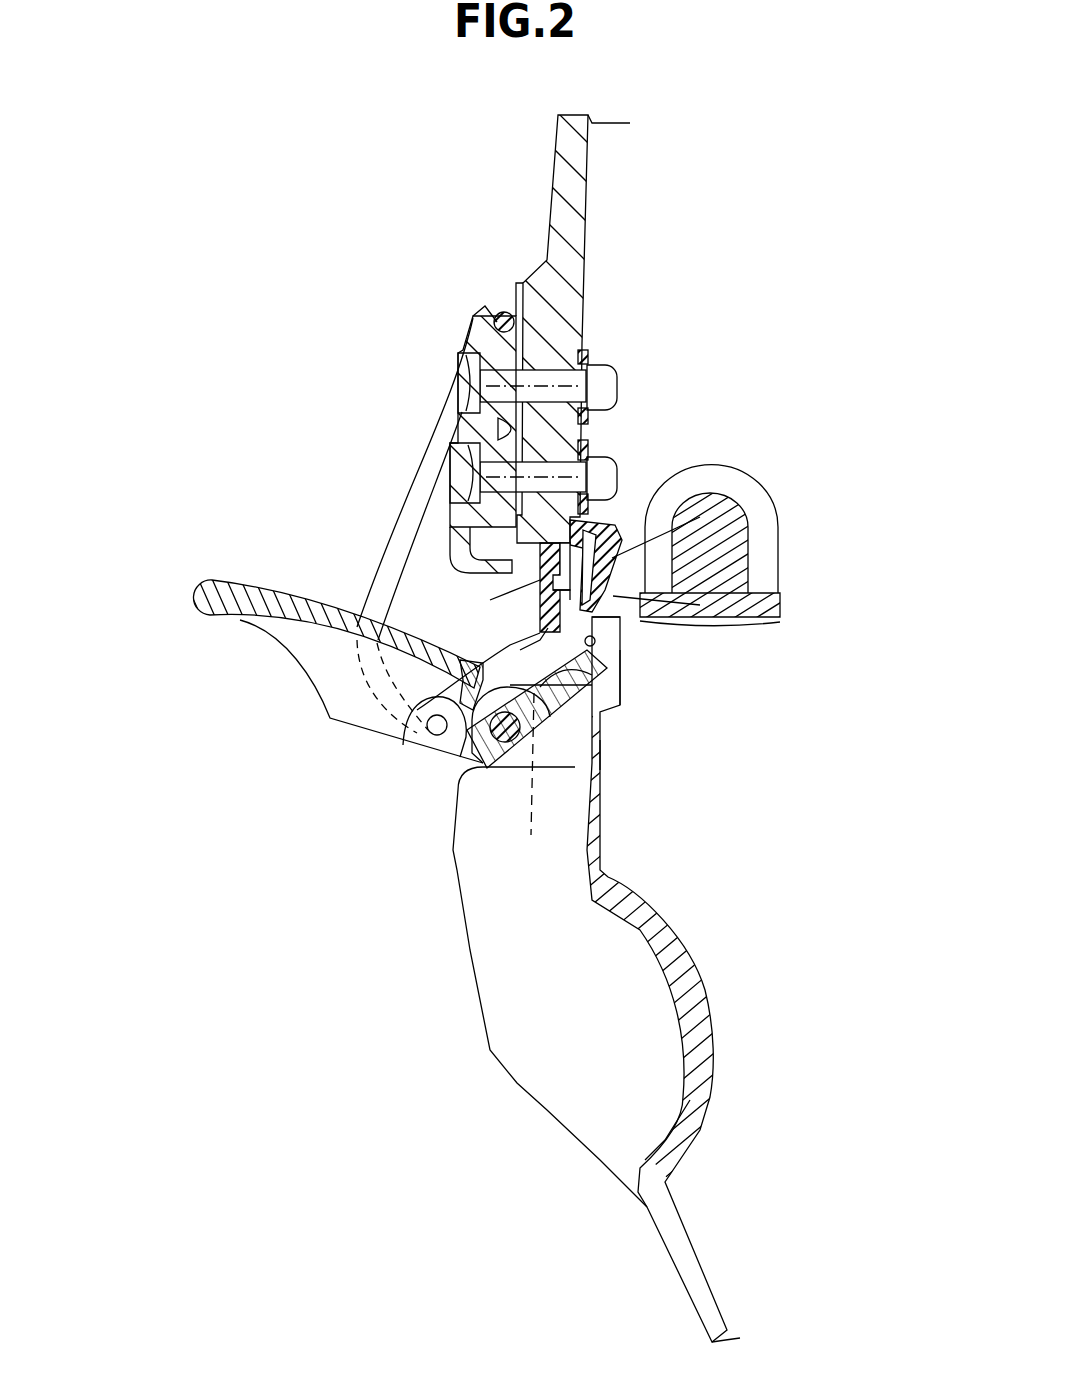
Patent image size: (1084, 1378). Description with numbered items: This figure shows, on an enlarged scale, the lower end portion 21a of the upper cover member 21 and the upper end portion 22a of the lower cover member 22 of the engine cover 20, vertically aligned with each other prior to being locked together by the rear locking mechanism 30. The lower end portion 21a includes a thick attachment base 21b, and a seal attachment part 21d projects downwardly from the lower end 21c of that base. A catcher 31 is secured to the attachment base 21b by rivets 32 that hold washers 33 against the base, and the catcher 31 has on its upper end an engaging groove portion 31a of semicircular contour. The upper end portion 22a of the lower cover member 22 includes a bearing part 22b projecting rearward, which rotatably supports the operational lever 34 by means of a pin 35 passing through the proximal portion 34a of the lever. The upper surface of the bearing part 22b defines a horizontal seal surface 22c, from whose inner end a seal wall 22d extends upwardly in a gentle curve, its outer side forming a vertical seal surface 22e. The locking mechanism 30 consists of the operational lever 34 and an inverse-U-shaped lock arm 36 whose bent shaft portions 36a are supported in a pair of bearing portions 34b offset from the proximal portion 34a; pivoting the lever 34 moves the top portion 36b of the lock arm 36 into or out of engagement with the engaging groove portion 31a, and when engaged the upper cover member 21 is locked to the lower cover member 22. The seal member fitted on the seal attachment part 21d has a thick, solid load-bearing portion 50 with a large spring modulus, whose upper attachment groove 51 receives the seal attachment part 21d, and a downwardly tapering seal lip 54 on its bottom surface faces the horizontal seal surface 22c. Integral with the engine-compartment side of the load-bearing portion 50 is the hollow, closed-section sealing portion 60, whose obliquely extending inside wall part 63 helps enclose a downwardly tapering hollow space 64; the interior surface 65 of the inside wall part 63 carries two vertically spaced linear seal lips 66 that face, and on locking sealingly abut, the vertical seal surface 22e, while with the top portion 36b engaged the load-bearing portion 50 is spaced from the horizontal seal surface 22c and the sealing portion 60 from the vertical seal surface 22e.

The engine cover 20 is at (515, 145).
The upper cover member 21 is at (585, 179).
The lower end portion 21a is at (525, 280).
The attachment base 21b is at (482, 450).
The lower end 21c is at (550, 600).
The seal attachment part 21d is at (545, 628).
The lower cover member 22 is at (712, 1097).
The upper end portion 22a is at (599, 752).
The bearing part 22b is at (487, 757).
The horizontal seal surface 22c is at (627, 693).
The seal wall 22d is at (620, 670).
The vertical seal surface 22e is at (617, 665).
The locking mechanism 30 is at (280, 714).
The catcher 31 is at (470, 418).
The engaging groove portion 31a is at (488, 308).
The rivet 32 is at (560, 375).
The washer 33 is at (588, 356).
The operational lever 34 is at (242, 615).
The proximal portion 34a is at (525, 781).
The bearing portion 34b is at (430, 730).
The pin 35 is at (500, 742).
The lock arm 36 is at (393, 535).
The shaft portion 36a is at (470, 745).
The top portion 36b is at (498, 312).
The load-bearing portion 50 is at (413, 700).
The attachment groove 51 is at (510, 540).
The seal lip 54 is at (567, 637).
The sealing portion 60 is at (690, 600).
The inside wall part 63 is at (613, 578).
The hollow space 64 is at (586, 557).
The interior surface 65 is at (643, 622).
The seal lip 66 is at (612, 558).